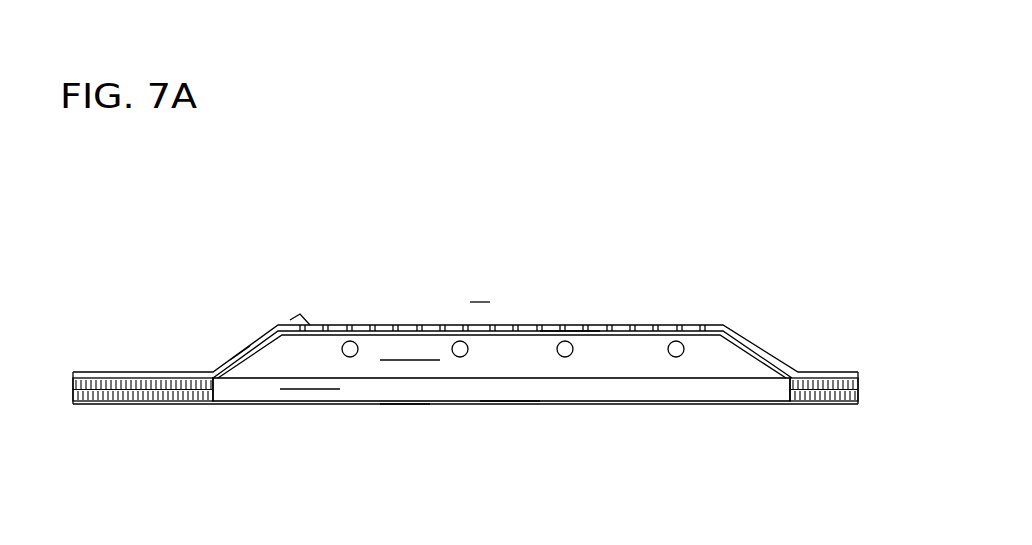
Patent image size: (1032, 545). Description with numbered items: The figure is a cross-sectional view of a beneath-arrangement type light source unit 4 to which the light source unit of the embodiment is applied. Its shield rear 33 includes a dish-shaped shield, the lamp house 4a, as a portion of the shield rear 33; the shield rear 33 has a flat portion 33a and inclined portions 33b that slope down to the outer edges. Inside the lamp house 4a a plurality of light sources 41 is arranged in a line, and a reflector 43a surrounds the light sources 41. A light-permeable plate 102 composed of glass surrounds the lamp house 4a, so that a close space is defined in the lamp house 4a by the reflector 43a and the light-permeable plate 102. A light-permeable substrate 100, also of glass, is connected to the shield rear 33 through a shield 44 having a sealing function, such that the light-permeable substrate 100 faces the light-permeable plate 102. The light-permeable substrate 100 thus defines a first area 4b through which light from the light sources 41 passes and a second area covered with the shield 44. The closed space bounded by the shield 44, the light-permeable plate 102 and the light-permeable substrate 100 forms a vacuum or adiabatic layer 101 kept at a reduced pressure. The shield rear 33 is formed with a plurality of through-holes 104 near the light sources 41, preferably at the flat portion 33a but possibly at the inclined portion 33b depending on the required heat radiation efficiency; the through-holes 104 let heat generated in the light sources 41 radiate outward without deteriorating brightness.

The sensor unit 4 is at (479, 297).
The lamp house 4a is at (407, 347).
The first area 4b is at (400, 404).
The light sources 41 is at (676, 341).
The reflector 43a is at (433, 326).
The through-holes 104 is at (567, 327).
The light-permeable plate 102 is at (720, 376).
The vacuum or adiabatic layer 101 is at (313, 393).
The light-permeable substrate 100 is at (508, 403).
The shield rear 33 is at (812, 371).
The flat portion 33a is at (326, 327).
The inclined portion 33b is at (240, 352).
The shield 44 is at (152, 404).